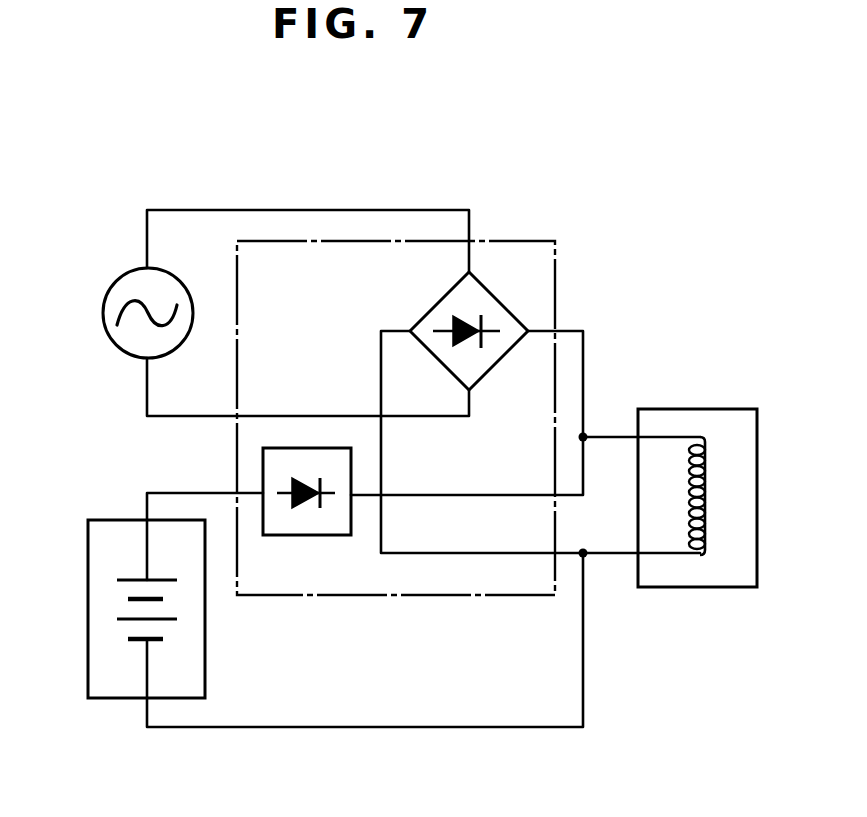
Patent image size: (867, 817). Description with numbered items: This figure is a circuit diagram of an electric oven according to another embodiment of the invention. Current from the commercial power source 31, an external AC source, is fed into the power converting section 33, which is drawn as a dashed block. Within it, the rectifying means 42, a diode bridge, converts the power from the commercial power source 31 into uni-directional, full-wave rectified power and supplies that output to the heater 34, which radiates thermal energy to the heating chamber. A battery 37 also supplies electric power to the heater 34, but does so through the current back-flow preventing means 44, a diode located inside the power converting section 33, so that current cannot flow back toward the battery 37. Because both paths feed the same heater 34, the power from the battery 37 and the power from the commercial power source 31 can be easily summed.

The commercial power source 31 is at (103, 315).
The power converting section 33 is at (557, 283).
The heater 34 is at (697, 408).
The battery 37 is at (206, 651).
The rectifying means 42 is at (431, 308).
The current back-flow preventing means 44 is at (313, 536).